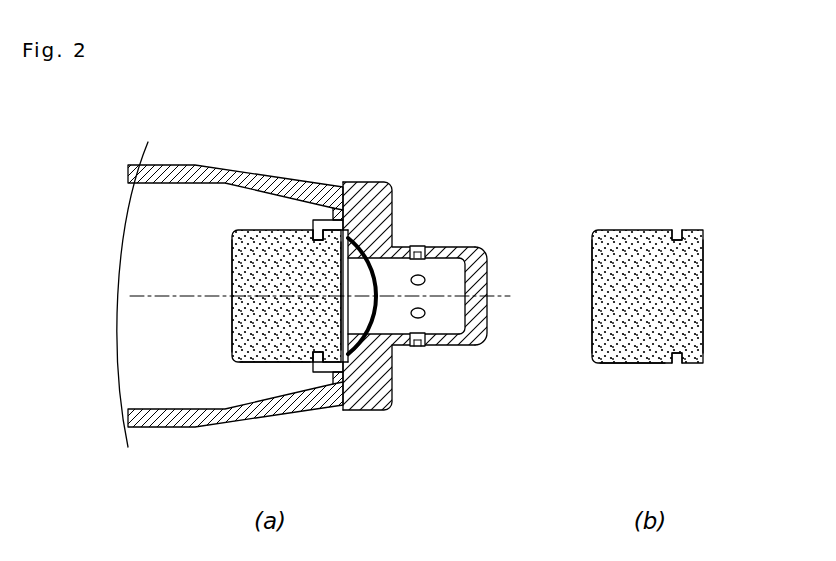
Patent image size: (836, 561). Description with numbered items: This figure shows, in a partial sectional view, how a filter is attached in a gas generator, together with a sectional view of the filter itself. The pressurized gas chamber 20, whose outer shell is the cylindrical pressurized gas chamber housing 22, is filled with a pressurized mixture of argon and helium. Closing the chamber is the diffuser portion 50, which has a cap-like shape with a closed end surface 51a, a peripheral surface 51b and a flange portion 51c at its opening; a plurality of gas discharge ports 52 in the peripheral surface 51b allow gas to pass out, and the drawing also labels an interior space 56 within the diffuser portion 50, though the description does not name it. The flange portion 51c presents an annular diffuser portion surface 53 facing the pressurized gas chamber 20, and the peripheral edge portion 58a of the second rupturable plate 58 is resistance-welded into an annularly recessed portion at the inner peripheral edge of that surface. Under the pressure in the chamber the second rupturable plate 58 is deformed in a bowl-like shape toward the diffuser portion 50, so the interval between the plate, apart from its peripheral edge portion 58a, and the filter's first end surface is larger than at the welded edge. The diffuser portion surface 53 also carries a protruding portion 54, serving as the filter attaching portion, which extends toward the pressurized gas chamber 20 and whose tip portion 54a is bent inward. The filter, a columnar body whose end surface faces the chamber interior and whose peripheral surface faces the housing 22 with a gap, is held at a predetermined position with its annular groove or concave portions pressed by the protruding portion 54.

The pressurized gas chamber 20 is at (138, 282).
The pressurized gas chamber housing 22 is at (176, 165).
The diffuser portion 50 is at (422, 272).
The closed end surface 51a is at (452, 265).
The peripheral surface 51b is at (460, 345).
The flange portion 51c is at (382, 183).
The gas discharge ports 52 is at (416, 346).
The diffuser portion surface 53 is at (325, 218).
The protruding portion 54 is at (317, 216).
The tip portion 54a is at (308, 245).
The through hole 56 is at (430, 308).
The second rupturable plate 58 is at (374, 305).
The peripheral edge portion 58a is at (360, 238).